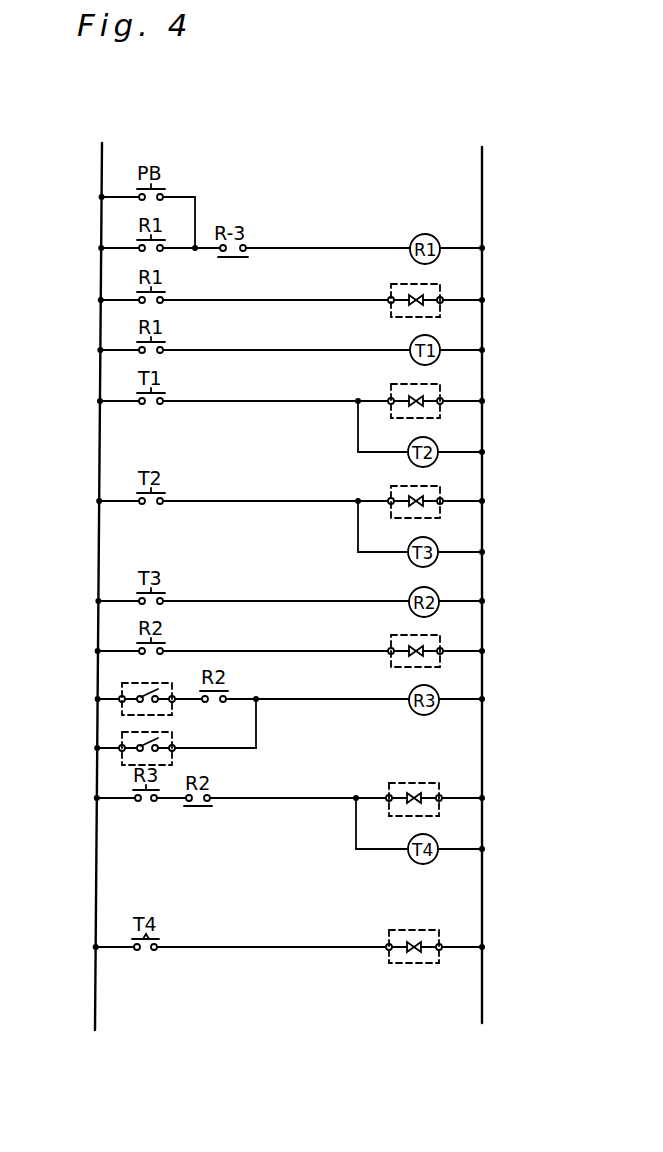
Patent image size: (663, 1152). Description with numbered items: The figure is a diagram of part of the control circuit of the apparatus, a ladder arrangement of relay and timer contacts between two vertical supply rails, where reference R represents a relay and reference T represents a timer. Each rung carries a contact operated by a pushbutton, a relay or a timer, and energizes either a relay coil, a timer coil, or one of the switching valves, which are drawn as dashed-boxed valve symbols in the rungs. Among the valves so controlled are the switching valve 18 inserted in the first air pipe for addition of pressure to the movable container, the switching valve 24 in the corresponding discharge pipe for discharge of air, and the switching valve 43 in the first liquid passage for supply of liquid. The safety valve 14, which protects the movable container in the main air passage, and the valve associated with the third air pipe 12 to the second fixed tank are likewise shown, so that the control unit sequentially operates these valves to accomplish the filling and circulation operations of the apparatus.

The switching valve 18 is at (416, 303).
The safety valve 14 is at (416, 504).
The switching valve 43 is at (416, 654).
The switching valve 24 is at (414, 801).
The third air pipe 12 is at (410, 952).